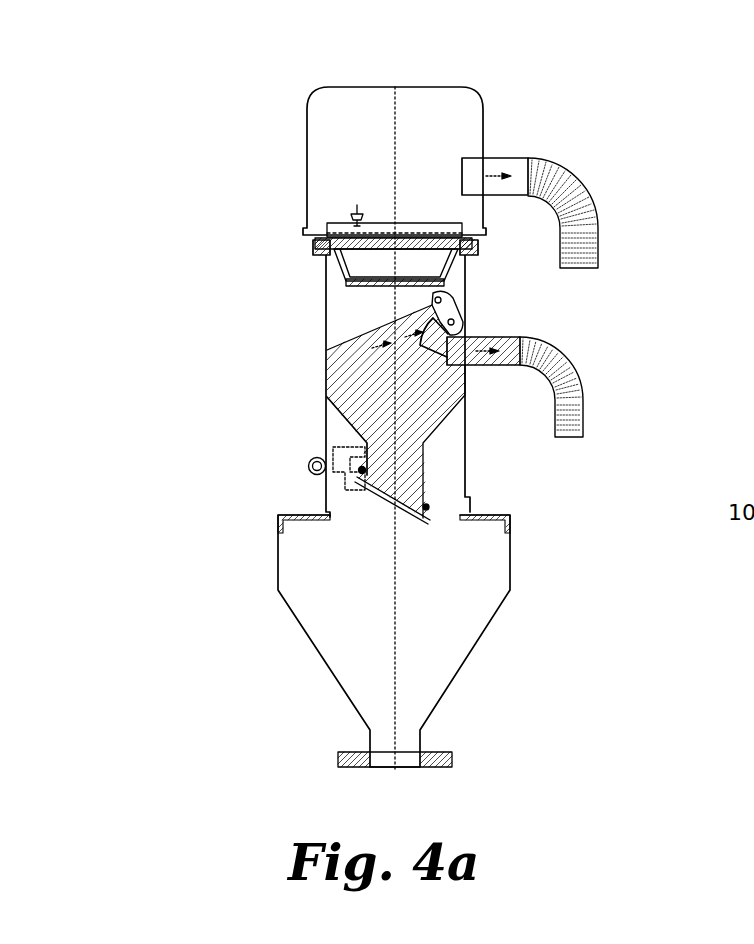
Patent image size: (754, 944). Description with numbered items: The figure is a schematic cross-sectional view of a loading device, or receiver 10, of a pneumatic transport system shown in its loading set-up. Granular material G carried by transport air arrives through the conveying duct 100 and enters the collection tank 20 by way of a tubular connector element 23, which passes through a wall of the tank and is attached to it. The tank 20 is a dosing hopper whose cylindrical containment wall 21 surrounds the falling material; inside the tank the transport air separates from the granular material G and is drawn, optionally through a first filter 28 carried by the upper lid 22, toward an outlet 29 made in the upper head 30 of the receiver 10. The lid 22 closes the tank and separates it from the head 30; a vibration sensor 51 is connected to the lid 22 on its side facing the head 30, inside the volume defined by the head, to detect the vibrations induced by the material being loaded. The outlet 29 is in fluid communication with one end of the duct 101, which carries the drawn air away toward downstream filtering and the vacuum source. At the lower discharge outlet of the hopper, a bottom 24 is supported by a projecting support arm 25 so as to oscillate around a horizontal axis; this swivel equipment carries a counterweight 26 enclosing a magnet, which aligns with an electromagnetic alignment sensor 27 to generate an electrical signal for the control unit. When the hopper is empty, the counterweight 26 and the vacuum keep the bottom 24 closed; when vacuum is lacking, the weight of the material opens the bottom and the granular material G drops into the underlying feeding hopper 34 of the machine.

The loading device (receiver) 10 is at (263, 374).
The collection tank (dosing hopper) 20 is at (327, 387).
The containment wall 21 is at (326, 343).
The upper lid 22 is at (427, 292).
The tubular connector element 23 is at (494, 337).
The bottom 24 is at (424, 503).
The support arm 25 is at (356, 497).
The counterweight 26 is at (325, 490).
The electromagnetic alignment sensor 27 is at (308, 463).
The first filter 28 is at (345, 297).
The outlet 29 is at (502, 157).
The upper head 30 is at (372, 87).
The feeding hopper 34 is at (477, 643).
The sensor 51 is at (355, 198).
The conveying duct 100 is at (585, 407).
The duct 101 is at (598, 231).
The granular material G is at (428, 410).